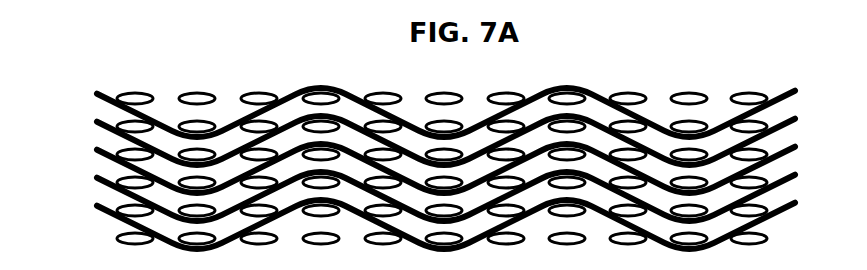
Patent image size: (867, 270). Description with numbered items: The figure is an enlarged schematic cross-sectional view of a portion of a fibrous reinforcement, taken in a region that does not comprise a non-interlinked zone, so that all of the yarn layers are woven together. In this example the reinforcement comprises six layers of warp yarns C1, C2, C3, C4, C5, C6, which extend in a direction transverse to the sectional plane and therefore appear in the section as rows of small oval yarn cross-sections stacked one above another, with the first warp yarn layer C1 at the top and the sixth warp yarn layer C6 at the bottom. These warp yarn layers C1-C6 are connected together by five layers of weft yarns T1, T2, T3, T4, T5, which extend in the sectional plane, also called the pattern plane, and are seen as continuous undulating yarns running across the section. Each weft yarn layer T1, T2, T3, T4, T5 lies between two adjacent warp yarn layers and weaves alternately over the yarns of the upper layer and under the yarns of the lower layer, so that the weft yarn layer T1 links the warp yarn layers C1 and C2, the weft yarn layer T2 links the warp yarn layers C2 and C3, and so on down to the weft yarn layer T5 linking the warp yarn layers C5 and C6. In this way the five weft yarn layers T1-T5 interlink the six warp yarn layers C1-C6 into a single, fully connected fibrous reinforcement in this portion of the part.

The weft yarn layer T1 is at (97, 94).
The weft yarn layer T2 is at (97, 122).
The weft yarn layer T3 is at (97, 150).
The weft yarn layer T4 is at (97, 178).
The weft yarn layer T5 is at (97, 206).
The warp yarn layer C1 is at (756, 96).
The warp yarn layer C2 is at (756, 124).
The warp yarn layer C3 is at (756, 152).
The warp yarn layer C4 is at (756, 180).
The warp yarn layer C5 is at (756, 208).
The warp yarn layer C6 is at (756, 236).